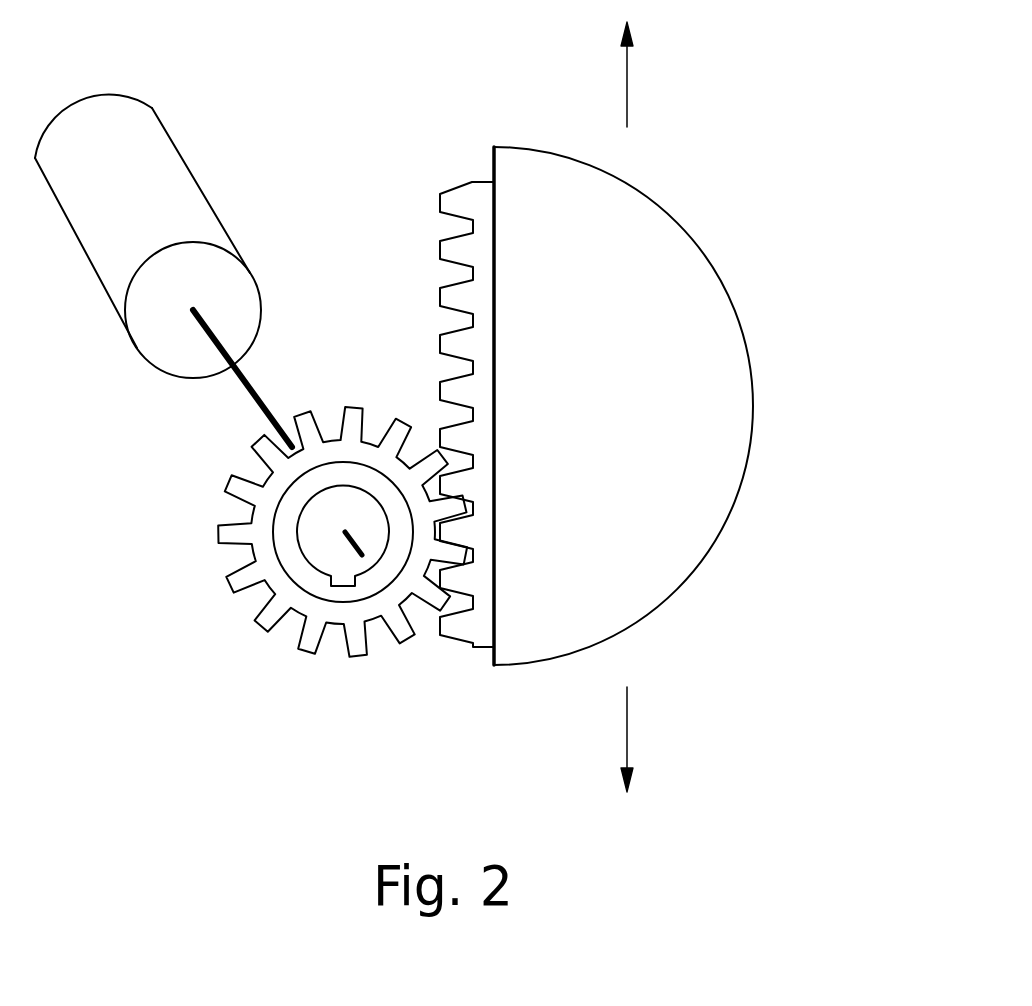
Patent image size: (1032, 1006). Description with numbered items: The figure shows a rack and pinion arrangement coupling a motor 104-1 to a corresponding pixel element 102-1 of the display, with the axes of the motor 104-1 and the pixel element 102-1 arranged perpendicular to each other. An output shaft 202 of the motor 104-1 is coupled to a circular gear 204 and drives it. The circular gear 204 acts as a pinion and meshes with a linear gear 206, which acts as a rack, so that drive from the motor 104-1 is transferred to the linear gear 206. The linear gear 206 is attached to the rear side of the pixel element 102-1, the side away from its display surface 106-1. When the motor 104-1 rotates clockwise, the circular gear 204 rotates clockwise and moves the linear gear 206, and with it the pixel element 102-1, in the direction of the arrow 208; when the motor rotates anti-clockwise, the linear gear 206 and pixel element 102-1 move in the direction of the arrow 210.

The pixel element 102-1 is at (703, 390).
The motor 104-1 is at (160, 125).
The display surface 106-1 is at (760, 405).
The output shaft 202 is at (252, 400).
The circular gear 204 is at (300, 652).
The linear gear 206 is at (455, 191).
The arrow 208 is at (619, 739).
The arrow 210 is at (619, 74).